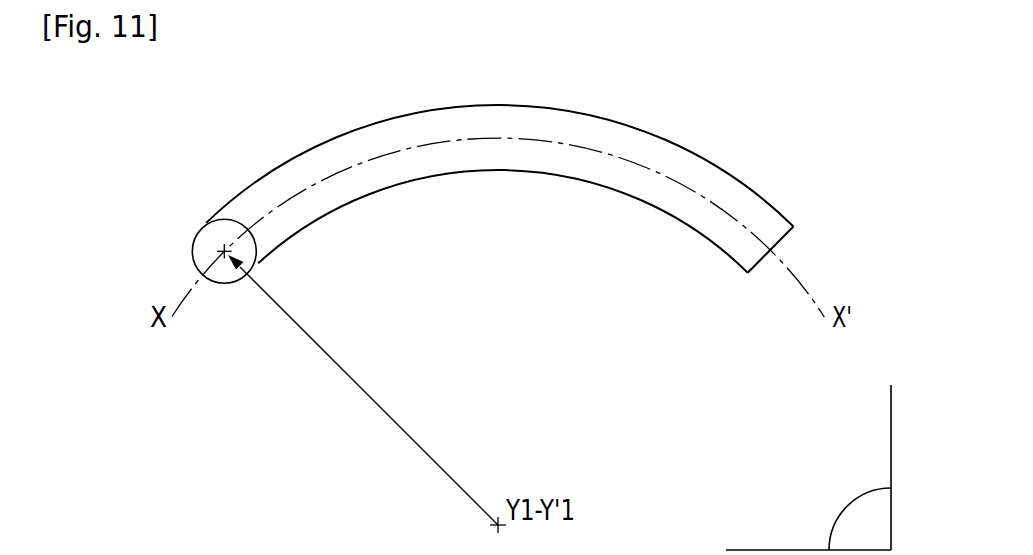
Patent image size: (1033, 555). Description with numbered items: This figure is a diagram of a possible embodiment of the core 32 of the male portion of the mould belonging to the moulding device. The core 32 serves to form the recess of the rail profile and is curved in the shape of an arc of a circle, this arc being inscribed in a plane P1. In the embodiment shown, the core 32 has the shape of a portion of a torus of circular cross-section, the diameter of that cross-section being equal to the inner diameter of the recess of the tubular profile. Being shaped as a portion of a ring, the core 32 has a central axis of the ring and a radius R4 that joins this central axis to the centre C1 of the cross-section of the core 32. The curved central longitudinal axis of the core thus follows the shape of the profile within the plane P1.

The core 32 is at (677, 163).
The centre of the cross-section of the core C1 is at (224, 250).
The radius R4 is at (367, 394).
The plane P1 is at (808, 467).